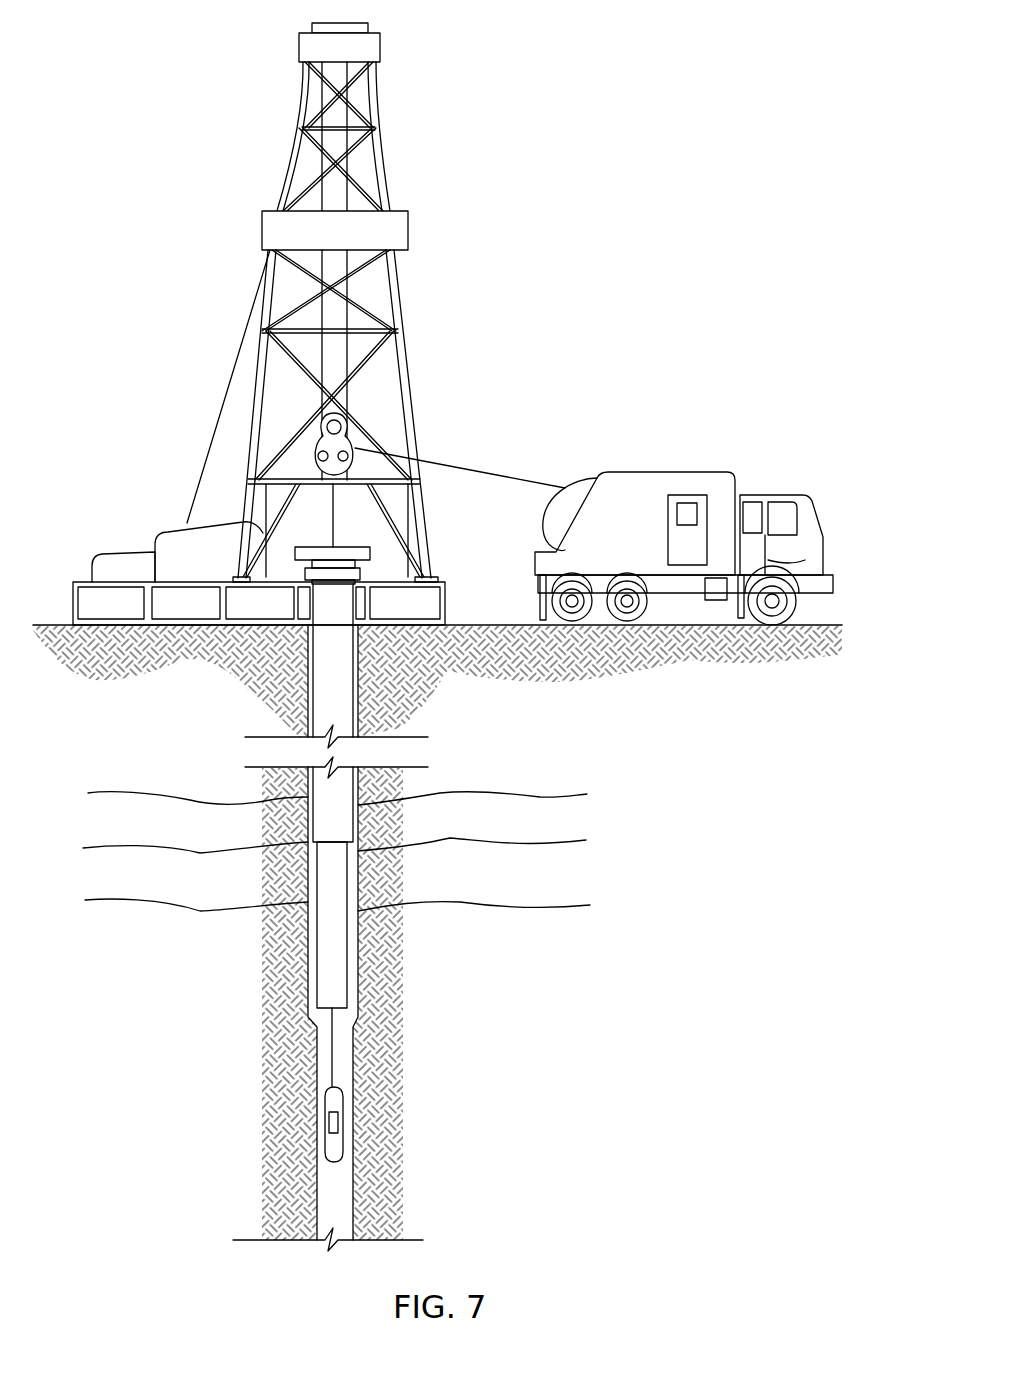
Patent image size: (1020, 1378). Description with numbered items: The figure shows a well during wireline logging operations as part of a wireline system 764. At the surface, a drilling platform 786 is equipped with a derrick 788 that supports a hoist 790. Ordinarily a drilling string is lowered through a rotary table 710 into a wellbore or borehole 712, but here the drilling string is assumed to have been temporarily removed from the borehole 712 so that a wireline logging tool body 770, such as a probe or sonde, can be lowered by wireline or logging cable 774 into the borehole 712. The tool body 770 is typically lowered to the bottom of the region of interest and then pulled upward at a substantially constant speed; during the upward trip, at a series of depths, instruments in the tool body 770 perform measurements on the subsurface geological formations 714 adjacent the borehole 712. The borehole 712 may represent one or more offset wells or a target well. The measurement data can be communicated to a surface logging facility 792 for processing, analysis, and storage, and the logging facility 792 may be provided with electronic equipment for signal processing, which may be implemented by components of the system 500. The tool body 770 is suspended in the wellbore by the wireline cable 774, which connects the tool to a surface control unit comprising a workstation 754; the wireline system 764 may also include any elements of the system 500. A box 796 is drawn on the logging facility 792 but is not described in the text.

The wireline system 764 is at (622, 236).
The hoist 790 is at (341, 431).
The wireline cable 774 is at (463, 463).
The surface logging facility 792 is at (640, 472).
The control box 796 is at (687, 501).
The workstation 754 is at (666, 545).
The rotary table 710 is at (366, 546).
The derrick 788 is at (438, 577).
The drilling platform 786 is at (446, 612).
The subsurface geological formations 714 is at (607, 787).
The borehole 712 is at (317, 1040).
The wireline logging tool body 770 is at (341, 1098).
The system 500 is at (346, 1123).